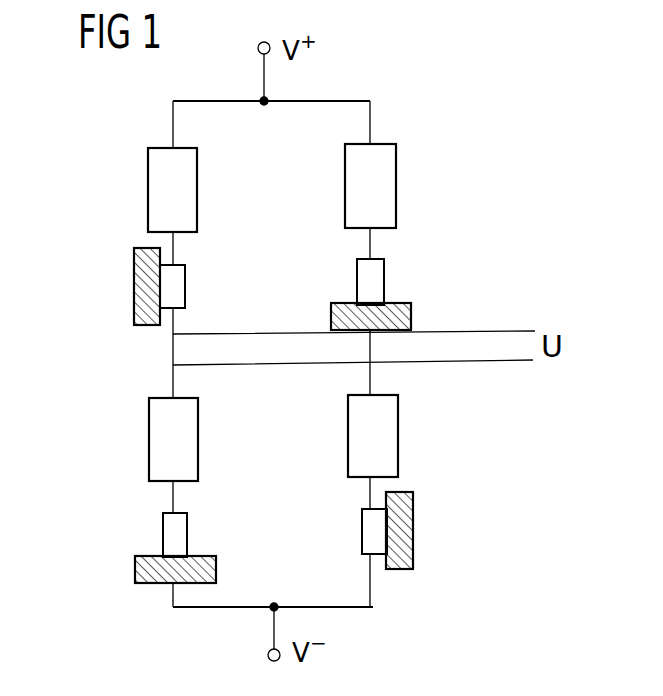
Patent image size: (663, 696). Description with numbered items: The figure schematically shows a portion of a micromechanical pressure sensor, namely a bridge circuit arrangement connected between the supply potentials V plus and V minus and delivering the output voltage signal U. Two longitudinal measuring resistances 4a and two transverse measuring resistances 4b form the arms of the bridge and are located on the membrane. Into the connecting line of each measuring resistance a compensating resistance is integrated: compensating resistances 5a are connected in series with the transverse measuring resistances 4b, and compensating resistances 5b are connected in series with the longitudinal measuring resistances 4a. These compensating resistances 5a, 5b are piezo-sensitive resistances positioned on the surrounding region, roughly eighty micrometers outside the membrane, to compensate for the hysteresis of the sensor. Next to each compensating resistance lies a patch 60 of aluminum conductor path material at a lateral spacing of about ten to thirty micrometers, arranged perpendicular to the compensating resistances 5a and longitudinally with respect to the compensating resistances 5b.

The longitudinal measuring resistances 4a is at (420, 178).
The transverse measuring resistances 4b is at (125, 184).
The compensating resistances of the transverse measuring resistances 5a is at (385, 271).
The compensating resistances of the longitudinal measuring resistances 5b is at (187, 280).
The patches 60 is at (133, 288).